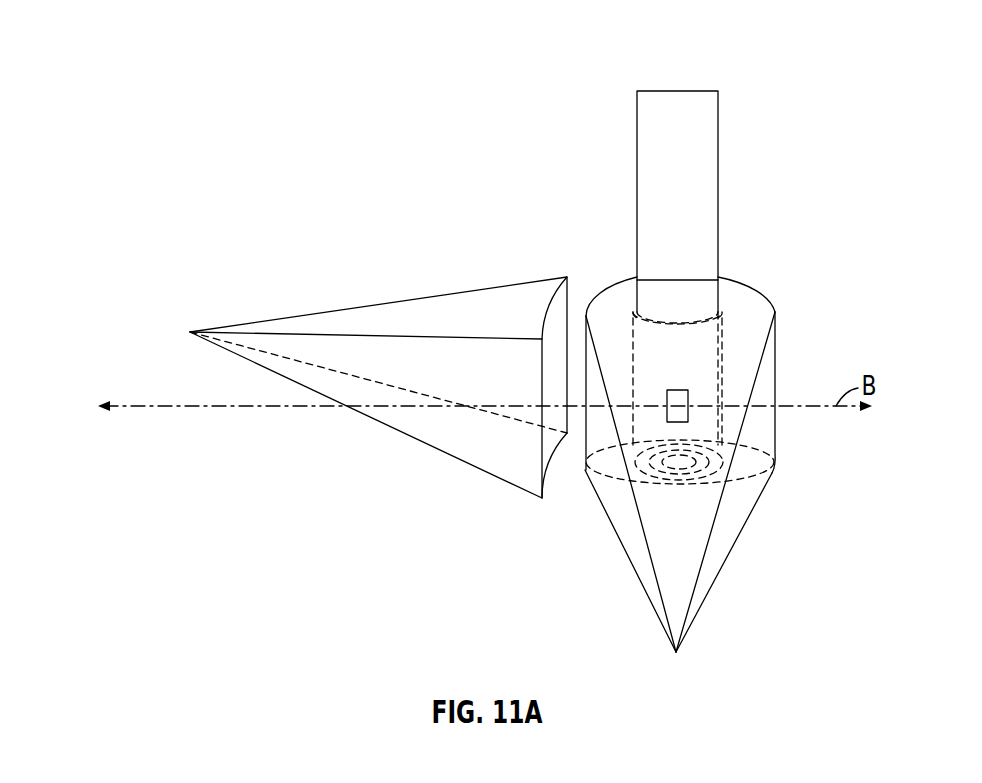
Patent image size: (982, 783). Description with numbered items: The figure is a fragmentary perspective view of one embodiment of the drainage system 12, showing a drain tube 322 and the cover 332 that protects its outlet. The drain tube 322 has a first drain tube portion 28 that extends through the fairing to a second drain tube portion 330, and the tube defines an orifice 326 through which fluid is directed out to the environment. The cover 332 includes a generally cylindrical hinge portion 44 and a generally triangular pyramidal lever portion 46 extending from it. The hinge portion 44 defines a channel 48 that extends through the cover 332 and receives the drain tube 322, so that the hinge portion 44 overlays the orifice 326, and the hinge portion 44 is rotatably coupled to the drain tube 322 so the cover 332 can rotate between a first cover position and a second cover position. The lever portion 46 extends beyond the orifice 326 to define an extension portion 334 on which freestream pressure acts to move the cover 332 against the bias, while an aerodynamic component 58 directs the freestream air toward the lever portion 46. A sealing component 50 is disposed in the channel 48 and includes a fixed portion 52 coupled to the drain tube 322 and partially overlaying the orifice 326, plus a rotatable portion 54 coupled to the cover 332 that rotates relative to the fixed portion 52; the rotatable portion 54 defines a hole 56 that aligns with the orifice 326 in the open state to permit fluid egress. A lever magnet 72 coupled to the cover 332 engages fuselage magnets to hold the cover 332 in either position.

The drainage system 12 is at (157, 36).
The first drain tube portion 28 is at (636, 172).
The drain tube 322 is at (768, 179).
The second drain tube portion 330 is at (643, 290).
The orifice 326 is at (635, 325).
The lever magnet 72 is at (683, 390).
The rotatable portion 54 is at (697, 440).
The hole 56 is at (697, 460).
The fixed portion 52 is at (666, 480).
The sealing component 50 is at (737, 475).
The hinge portion 44 is at (776, 444).
The channel 48 is at (645, 422).
The lever portion 46 is at (693, 612).
The extension portion 334 is at (723, 548).
The cover 332 is at (762, 523).
The aerodynamic component 58 is at (300, 378).